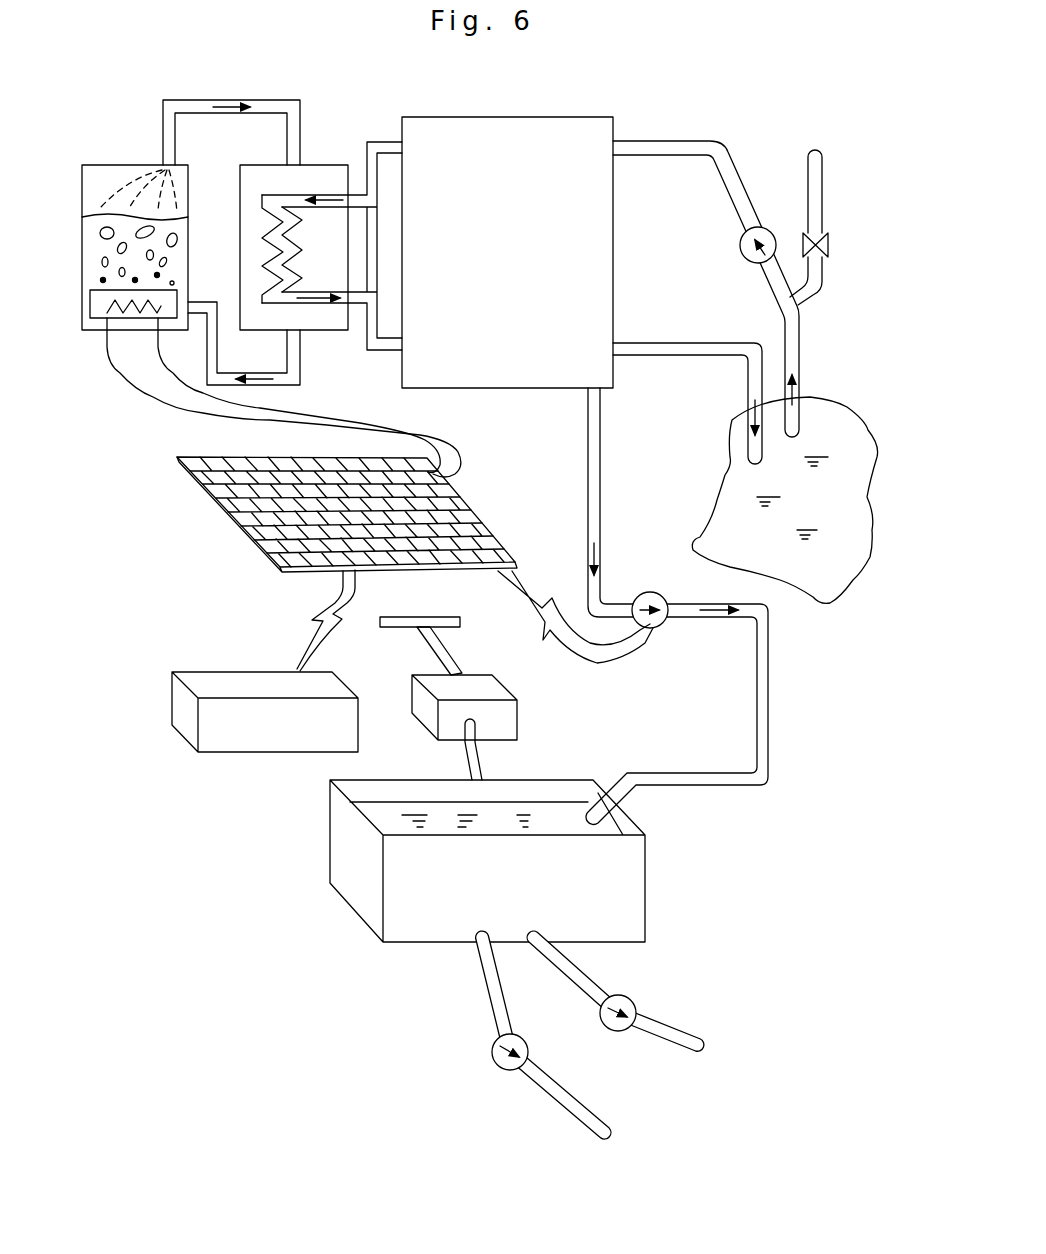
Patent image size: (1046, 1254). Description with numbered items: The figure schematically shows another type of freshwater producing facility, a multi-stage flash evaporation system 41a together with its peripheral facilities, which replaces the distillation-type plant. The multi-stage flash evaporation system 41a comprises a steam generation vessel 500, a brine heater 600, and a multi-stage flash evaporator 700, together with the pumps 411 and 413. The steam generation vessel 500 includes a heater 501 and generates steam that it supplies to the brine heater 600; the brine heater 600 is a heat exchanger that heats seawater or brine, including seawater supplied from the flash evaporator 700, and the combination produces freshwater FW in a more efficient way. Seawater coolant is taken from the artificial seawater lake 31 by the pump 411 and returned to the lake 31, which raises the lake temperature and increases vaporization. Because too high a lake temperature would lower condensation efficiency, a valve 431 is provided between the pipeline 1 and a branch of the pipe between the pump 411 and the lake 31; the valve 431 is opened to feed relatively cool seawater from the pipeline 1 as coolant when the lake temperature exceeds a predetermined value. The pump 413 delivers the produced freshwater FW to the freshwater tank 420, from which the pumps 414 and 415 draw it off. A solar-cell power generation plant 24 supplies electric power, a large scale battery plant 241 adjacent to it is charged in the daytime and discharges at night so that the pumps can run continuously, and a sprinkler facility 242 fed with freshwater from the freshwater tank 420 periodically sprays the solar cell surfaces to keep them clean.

The steam generation vessel 500 is at (110, 163).
The heater 501 is at (97, 318).
The brine heater 600 is at (327, 165).
The multi-stage flash evaporator 700 is at (457, 117).
The multi-stage flash evaporation system 41a is at (750, 110).
The pump 411 is at (744, 256).
The pipeline 1 is at (823, 172).
The valve 431 is at (829, 242).
The artificial seawater lake 31 is at (857, 577).
The freshwater FW is at (600, 545).
The pump 413 is at (662, 624).
The solar-cell power generation plant 24 is at (228, 518).
The battery plant 241 is at (185, 740).
The sprinkler facility 242 is at (512, 692).
The freshwater tank 420 is at (650, 878).
The pump 414 is at (637, 998).
The pump 415 is at (530, 1046).